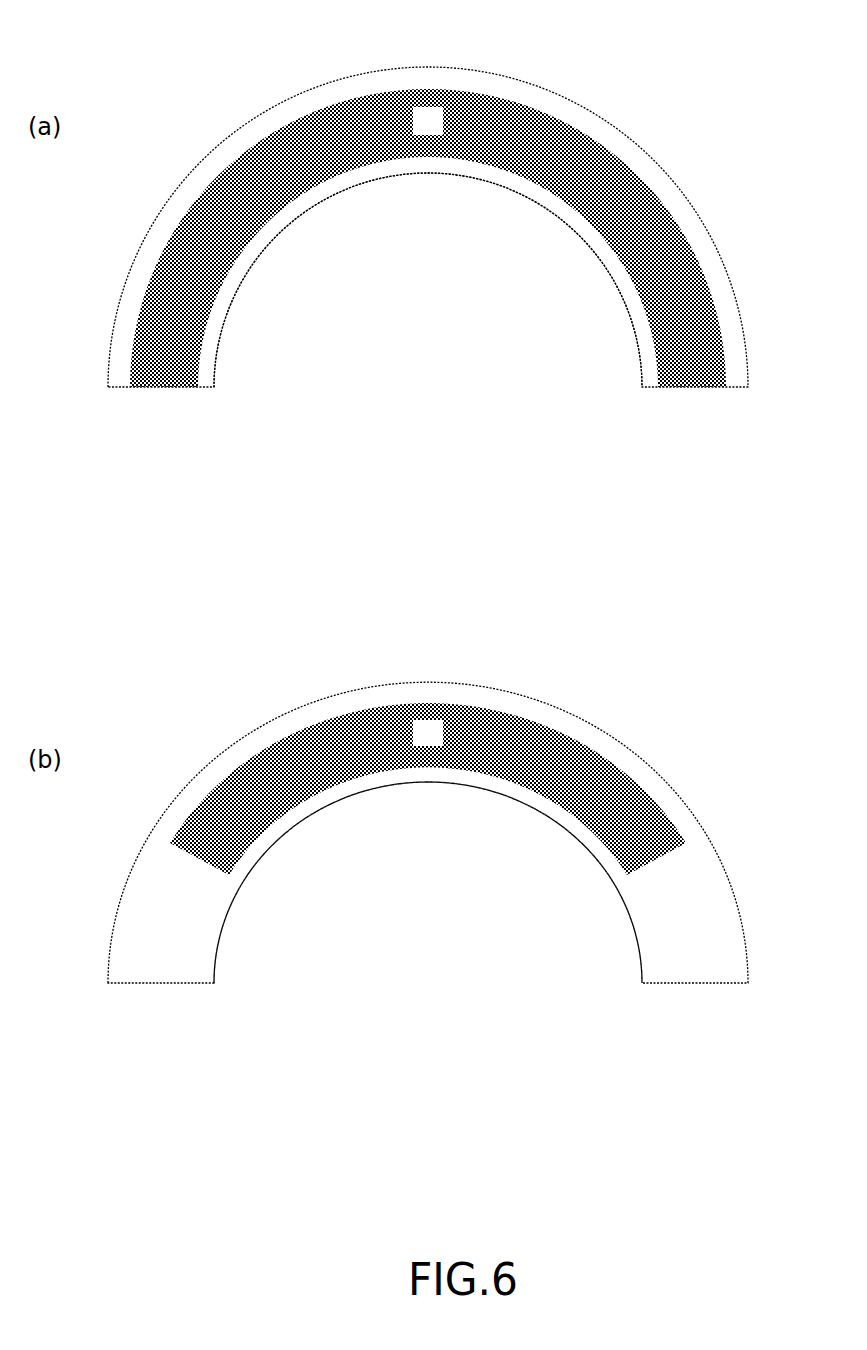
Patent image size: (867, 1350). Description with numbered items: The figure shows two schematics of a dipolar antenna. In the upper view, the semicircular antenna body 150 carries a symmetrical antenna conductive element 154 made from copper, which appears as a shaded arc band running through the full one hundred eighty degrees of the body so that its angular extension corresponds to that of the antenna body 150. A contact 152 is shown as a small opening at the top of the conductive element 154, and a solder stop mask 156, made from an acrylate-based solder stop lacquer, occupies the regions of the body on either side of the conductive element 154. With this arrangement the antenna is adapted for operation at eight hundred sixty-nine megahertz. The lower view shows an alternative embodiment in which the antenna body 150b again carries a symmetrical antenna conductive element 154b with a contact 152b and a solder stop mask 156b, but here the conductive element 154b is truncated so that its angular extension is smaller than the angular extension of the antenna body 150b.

The antenna body 150 is at (618, 133).
The contact 152 is at (435, 107).
The antenna conductive element 154 is at (540, 185).
The solder stop mask 156 is at (703, 258).
The antenna body 150b is at (633, 750).
The contact 152b is at (442, 722).
The antenna conductive element 154b is at (542, 793).
The solder stop mask 156b is at (675, 808).